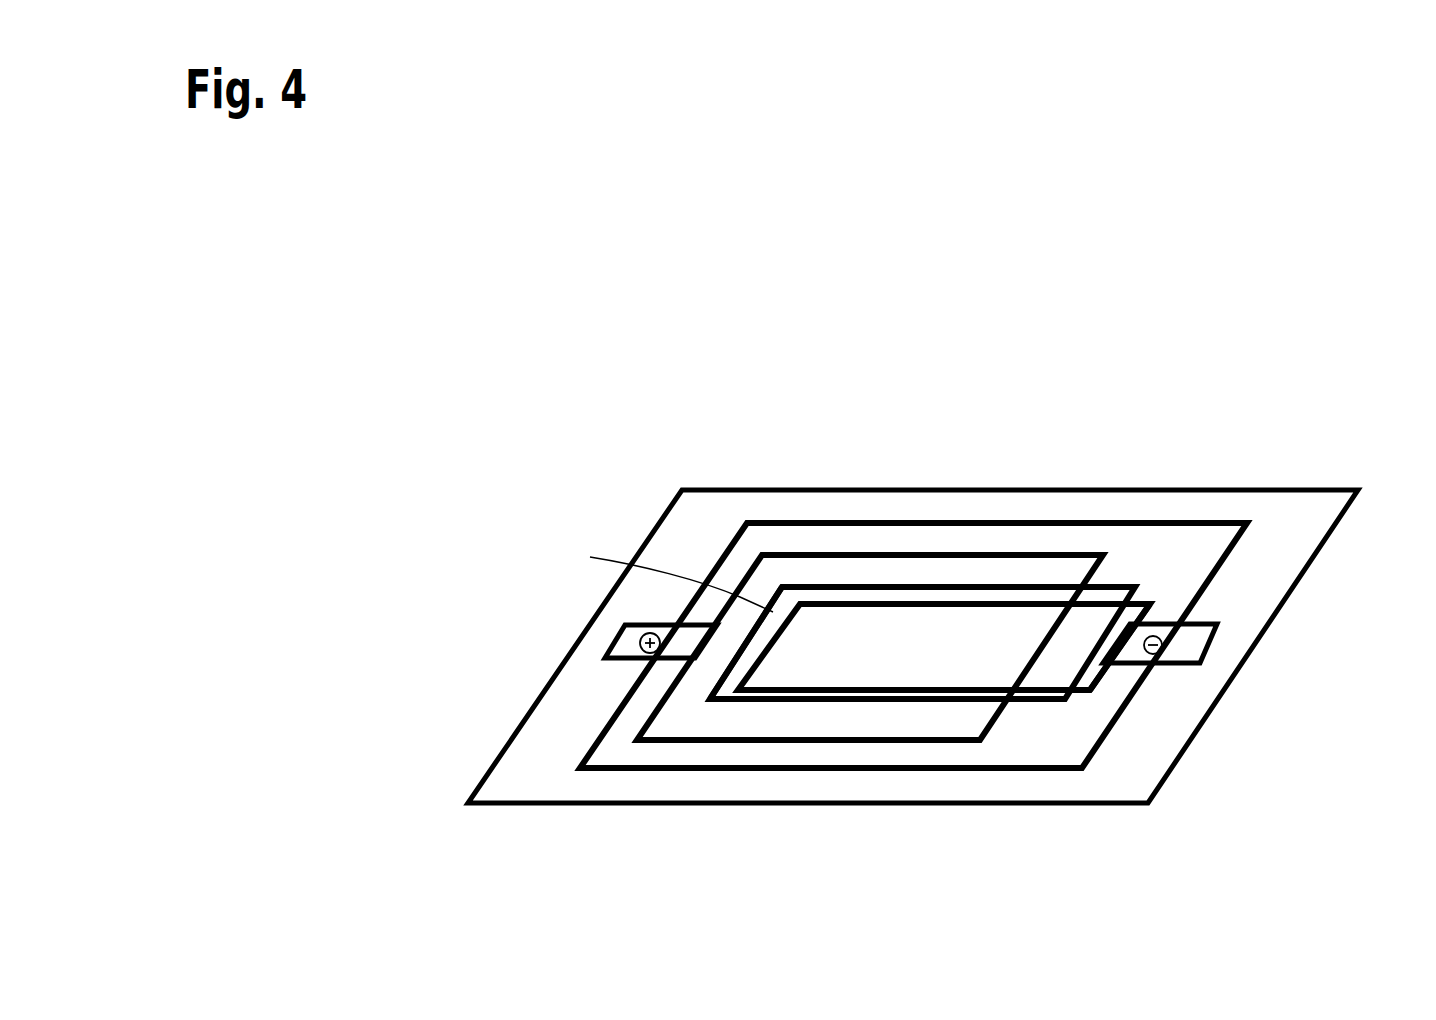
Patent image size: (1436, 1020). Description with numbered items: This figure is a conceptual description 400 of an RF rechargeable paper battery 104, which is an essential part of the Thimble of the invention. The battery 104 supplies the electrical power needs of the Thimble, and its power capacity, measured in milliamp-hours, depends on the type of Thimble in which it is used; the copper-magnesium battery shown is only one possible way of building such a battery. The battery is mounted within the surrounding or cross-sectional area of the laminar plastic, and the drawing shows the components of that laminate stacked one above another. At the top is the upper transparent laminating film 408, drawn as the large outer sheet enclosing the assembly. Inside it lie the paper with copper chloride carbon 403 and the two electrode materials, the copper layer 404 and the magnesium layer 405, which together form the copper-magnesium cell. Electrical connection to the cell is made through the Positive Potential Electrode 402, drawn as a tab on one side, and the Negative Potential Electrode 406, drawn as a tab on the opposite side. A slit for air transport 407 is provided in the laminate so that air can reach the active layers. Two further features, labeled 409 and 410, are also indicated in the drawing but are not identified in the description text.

The conceptual description 400 is at (577, 242).
The RF rechargeable paper battery 104 is at (680, 527).
The Positive Potential Electrode (PPE) 402 is at (638, 635).
The paper with Copper Chloride carbon 403 is at (778, 634).
The Copper layer 404 is at (905, 722).
The Magnesium layer 405 is at (1032, 650).
The Negative Potential Electrode (NNE) 406 is at (1201, 665).
The Slit for Air Transport 407 is at (1133, 623).
The upper transparent laminating film 408 is at (1208, 547).
The second electrode 409 is at (966, 586).
The membrane 410 is at (786, 573).